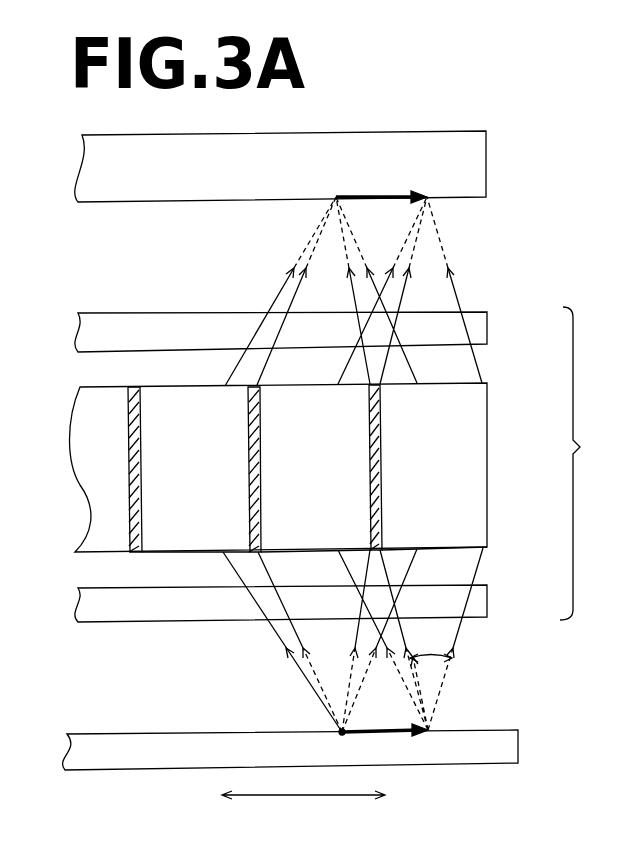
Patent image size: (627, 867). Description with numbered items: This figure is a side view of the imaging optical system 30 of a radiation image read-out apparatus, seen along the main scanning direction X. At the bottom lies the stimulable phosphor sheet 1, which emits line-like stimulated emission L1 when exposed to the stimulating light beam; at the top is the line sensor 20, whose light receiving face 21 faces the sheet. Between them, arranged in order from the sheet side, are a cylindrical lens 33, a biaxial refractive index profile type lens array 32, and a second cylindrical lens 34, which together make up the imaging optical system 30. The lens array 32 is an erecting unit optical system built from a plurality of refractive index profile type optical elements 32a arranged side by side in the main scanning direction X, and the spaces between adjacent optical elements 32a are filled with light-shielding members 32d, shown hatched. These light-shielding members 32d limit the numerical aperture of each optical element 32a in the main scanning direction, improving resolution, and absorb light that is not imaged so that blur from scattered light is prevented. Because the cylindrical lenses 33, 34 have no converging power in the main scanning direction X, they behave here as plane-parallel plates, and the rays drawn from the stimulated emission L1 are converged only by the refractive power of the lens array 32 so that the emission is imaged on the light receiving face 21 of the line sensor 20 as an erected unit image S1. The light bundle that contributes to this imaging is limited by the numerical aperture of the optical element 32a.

The stimulable phosphor sheet 1 is at (513, 748).
The line sensor 20 is at (448, 147).
The light receiving face 21 is at (464, 206).
The imaging optical system 30 is at (592, 463).
The biaxial refractive index profile type lens array 32 is at (489, 453).
The refractive index profile type optical element 32a is at (181, 540).
The light-shielding member 32d is at (137, 387).
The cylindrical lens 33 is at (480, 604).
The cylindrical lens 34 is at (478, 332).
The erected unit image S1 is at (368, 200).
The line-like stimulated emission L1 is at (378, 728).
The main scanning direction X is at (303, 812).